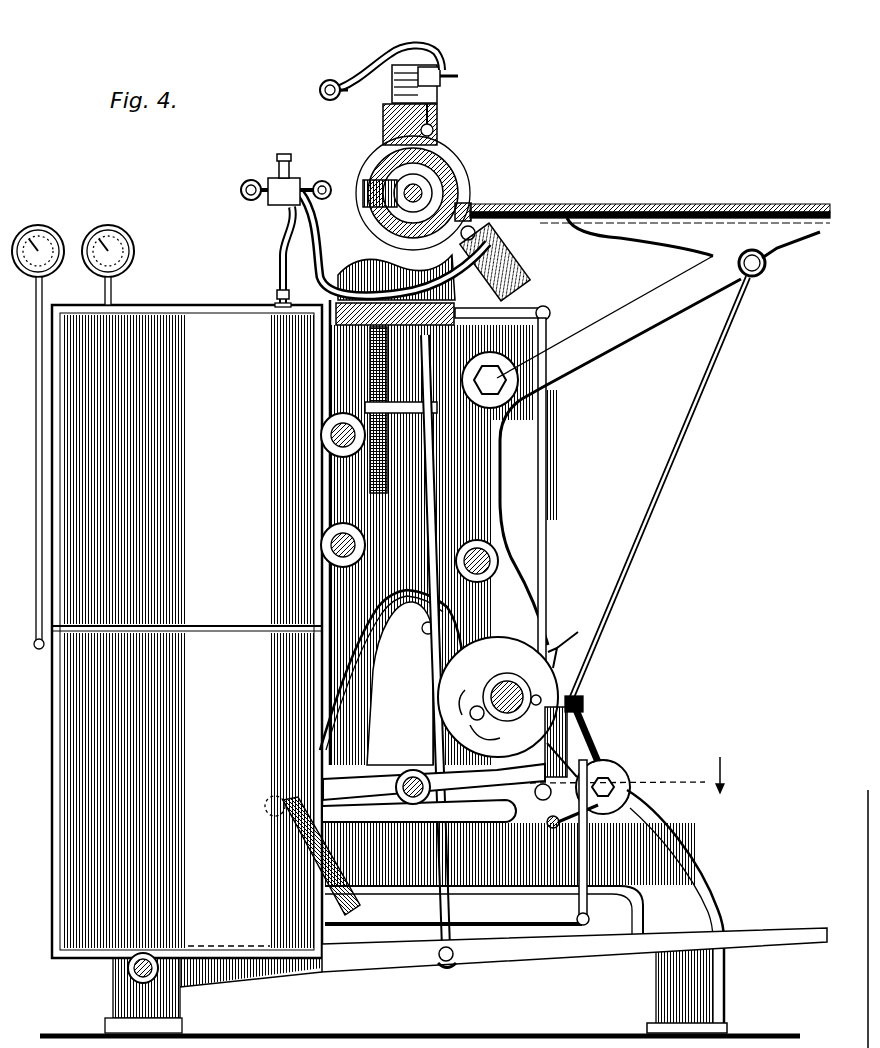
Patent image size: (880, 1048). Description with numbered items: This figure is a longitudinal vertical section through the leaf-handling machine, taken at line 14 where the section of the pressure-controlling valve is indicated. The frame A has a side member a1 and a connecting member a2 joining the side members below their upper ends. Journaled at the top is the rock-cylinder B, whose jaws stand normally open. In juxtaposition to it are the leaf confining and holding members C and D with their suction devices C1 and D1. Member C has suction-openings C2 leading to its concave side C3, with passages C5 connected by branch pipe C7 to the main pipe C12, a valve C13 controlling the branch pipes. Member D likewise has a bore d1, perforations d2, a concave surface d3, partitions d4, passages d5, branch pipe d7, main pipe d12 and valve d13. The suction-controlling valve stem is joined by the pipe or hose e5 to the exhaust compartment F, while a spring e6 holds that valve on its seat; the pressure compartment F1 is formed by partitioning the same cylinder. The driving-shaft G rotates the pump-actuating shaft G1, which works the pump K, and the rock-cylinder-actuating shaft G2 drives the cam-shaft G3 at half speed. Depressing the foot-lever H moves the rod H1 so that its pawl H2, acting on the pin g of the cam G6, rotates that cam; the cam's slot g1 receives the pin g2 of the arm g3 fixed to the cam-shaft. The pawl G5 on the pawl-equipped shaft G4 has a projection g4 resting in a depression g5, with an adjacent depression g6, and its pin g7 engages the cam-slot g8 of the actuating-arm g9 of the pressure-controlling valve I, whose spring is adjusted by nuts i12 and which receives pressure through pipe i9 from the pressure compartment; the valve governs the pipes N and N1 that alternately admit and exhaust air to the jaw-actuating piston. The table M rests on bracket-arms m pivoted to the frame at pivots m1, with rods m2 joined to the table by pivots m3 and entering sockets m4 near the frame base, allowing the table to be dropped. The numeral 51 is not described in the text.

The frame A is at (700, 845).
The rock-cylinder B is at (470, 160).
The leaf confining and holding member C is at (392, 115).
The suction device C1 is at (400, 38).
The suction-openings C2 is at (445, 168).
The concave side C3 is at (385, 145).
The passages C5 is at (433, 127).
The branch pipe C7 is at (391, 66).
The main pipe C12 is at (320, 82).
The valve C13 is at (445, 68).
The port 51 is at (468, 205).
The leaf confining and holding member D is at (480, 234).
The suction device D1 is at (522, 270).
The pipe d is at (548, 312).
The bore d1 is at (528, 216).
The perforations d2 is at (470, 222).
The concave surface d3 is at (370, 262).
The partitions d4 is at (498, 215).
The passages d5 is at (520, 240).
The branch pipe d7 is at (330, 283).
The main pipe d12 is at (242, 188).
The valve d13 is at (283, 158).
The pipe or hose e5 is at (280, 238).
The spring e6 is at (325, 180).
The exhaust compartment F is at (187, 631).
The pressure compartment F1 is at (187, 787).
The driving-shaft G is at (320, 547).
The pump-actuating shaft G1 is at (320, 436).
The rock-cylinder-actuating shaft G2 is at (500, 562).
The cam-shaft G3 is at (548, 655).
The pawl-equipped shaft G4 is at (410, 830).
The pawl G5 is at (482, 857).
The cam G6 is at (445, 688).
The pin or stud g is at (507, 683).
The slot g1 is at (470, 712).
The pin g2 is at (489, 741).
The arm g3 is at (465, 735).
The projection g4 is at (583, 735).
The depression g5 is at (542, 692).
The depression g6 is at (600, 655).
The pin g7 is at (575, 770).
The cam-slot g8 is at (437, 803).
The actuating-arm g9 is at (600, 812).
The foot-lever H is at (410, 960).
The rod H1 is at (434, 480).
The pawl H2 is at (424, 632).
The pressure-controlling valve I is at (612, 775).
The pipe i9 is at (500, 928).
The nuts i12 is at (620, 792).
The line 14 is at (725, 772).
The pump K is at (345, 760).
The table M is at (675, 198).
The bracket-arms m is at (670, 316).
The pivots m1 is at (512, 368).
The rods m2 is at (655, 520).
The pivots m3 is at (755, 270).
The sockets m4 is at (582, 700).
The pipe N is at (545, 830).
The pipe N1 is at (545, 410).
The side member a1 is at (503, 522).
The connecting member a2 is at (360, 340).